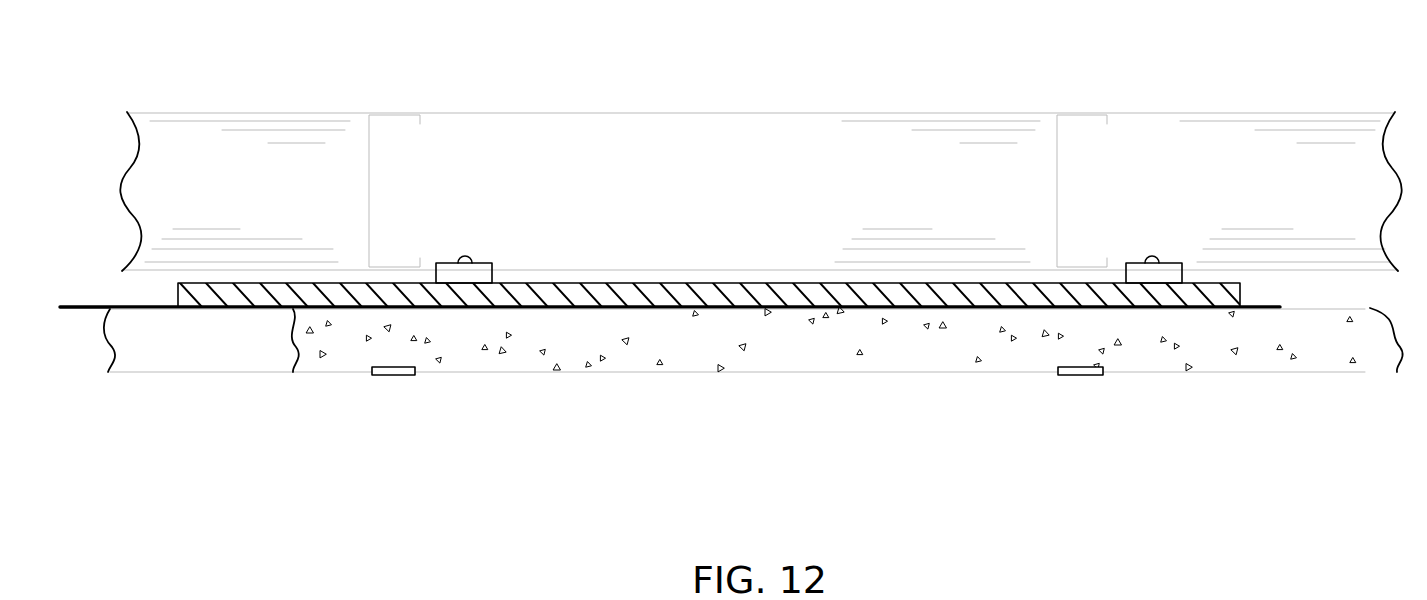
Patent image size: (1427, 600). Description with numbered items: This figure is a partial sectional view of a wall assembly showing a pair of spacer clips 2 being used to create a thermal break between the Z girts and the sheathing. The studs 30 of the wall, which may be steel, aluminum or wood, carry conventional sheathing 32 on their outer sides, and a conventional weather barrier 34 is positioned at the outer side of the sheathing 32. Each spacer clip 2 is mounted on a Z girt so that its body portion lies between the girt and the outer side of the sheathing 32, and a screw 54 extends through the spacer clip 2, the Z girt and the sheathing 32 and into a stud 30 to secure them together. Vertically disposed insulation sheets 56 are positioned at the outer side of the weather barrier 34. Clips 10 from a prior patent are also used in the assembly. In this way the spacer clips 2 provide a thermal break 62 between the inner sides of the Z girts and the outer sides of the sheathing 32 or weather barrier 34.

The spacer clip 2 is at (492, 252).
The clip 10 is at (389, 392).
The stud 30 is at (368, 228).
The sheathing 32 is at (1210, 283).
The weather barrier 34 is at (1269, 305).
The screw 54 is at (464, 258).
The insulation sheet 56 is at (702, 380).
The thermal break 62 is at (644, 275).